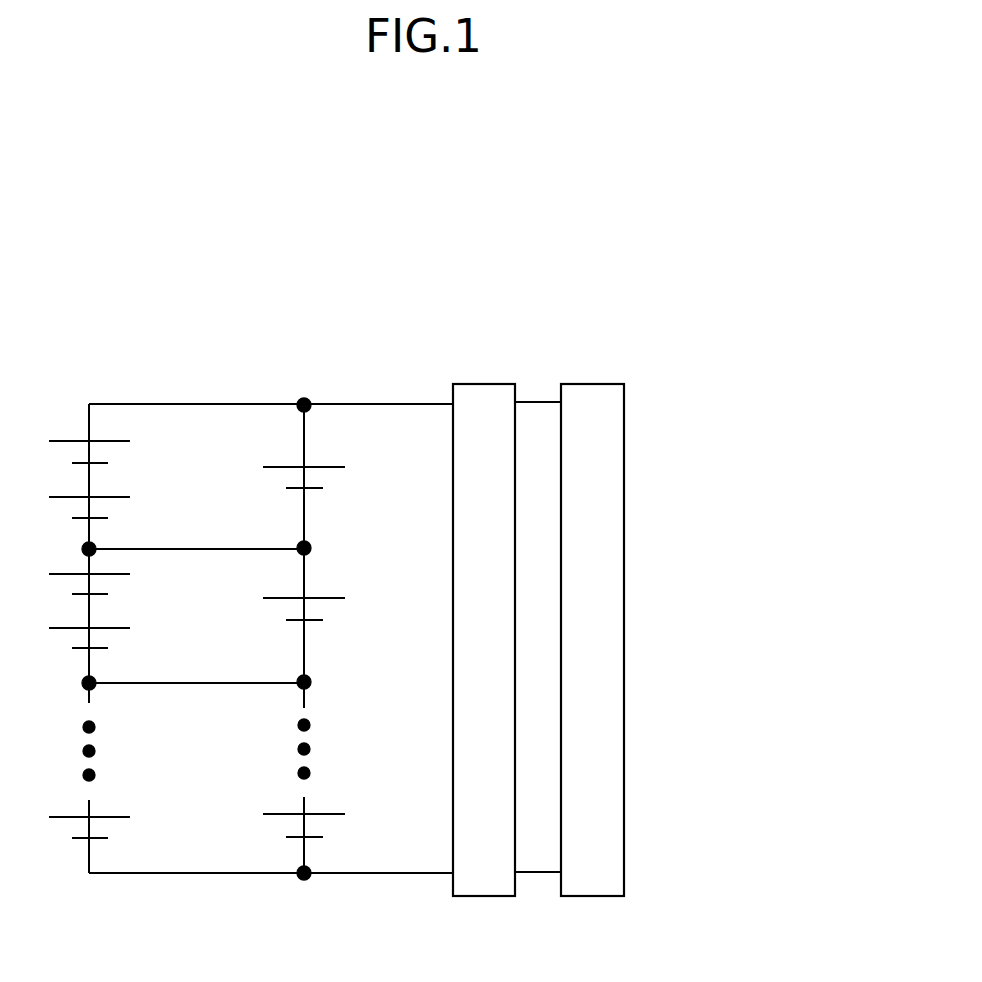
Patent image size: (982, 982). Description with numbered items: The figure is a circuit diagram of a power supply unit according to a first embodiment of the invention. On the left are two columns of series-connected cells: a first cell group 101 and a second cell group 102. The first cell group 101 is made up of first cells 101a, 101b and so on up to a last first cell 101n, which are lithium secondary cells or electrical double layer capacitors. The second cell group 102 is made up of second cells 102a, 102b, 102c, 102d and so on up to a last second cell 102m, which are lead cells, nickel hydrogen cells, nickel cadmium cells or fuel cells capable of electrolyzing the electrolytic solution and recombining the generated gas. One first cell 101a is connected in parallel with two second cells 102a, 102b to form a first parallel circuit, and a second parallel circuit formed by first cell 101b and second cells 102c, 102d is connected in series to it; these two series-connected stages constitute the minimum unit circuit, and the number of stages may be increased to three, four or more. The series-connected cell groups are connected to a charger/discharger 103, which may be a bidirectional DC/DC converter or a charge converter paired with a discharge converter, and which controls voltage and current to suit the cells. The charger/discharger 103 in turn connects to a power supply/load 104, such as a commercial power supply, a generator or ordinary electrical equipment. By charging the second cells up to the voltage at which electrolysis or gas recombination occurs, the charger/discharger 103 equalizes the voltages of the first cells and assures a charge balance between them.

The first cell group 101 is at (305, 396).
The first cell 101a is at (336, 480).
The first cell 101b is at (336, 608).
The first cell 101n is at (336, 828).
The second cell group 102 is at (88, 398).
The second cell 102a is at (122, 458).
The second cell 102b is at (122, 510).
The second cell 102c is at (122, 587).
The second cell 102d is at (122, 640).
The second cell 102m is at (122, 830).
The charger/discharger 103 is at (483, 383).
The power supply/load 104 is at (590, 383).